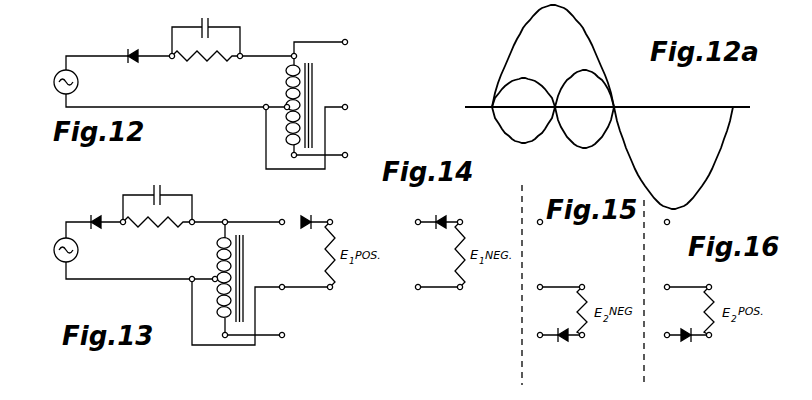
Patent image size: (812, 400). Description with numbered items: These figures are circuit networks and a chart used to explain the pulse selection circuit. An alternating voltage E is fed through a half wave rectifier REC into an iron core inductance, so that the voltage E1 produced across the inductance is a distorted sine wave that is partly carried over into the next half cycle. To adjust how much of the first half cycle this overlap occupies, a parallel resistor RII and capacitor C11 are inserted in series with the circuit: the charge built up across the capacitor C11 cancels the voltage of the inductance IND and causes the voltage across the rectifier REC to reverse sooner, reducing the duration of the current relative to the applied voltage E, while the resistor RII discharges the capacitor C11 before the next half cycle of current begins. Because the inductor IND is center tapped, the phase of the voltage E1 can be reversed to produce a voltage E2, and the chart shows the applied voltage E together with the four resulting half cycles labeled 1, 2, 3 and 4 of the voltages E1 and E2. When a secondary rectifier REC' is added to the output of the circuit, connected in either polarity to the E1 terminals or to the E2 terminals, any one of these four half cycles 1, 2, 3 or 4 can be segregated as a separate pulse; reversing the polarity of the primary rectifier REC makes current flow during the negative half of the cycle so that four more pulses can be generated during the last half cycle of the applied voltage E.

In FIG. 12, the alternating voltage E is at (54, 82).
In FIG. 12A, the alternating voltage E is at (518, 41).
In FIG. 13, the alternating voltage E is at (54, 250).
In FIG. 12, the half wave rectifier REC is at (119, 66).
In FIG. 13, the half wave rectifier REC is at (78, 203).
In FIG. 14, the half wave rectifier REC is at (465, 208).
In FIG. 15, the half wave rectifier REC is at (551, 354).
In FIG. 16, the half wave rectifier REC is at (695, 355).
In FIG. 13, the secondary rectifier REC' is at (294, 208).
In FIG. 12, the resistor RII is at (204, 60).
In FIG. 13, the resistor RII is at (150, 226).
In FIG. 12, the capacitor C11 is at (210, 21).
In FIG. 13, the capacitor C11 is at (162, 187).
In FIG. 12, the center-tapped inductor IND is at (284, 98).
In FIG. 13, the center-tapped inductor IND is at (216, 272).
In FIG. 12, the voltage across the inductance E1 is at (353, 74).
In FIG. 12A, the voltage across the inductance E1 is at (574, 141).
In FIG. 13, the voltage across the inductance E1 is at (286, 254).
In FIG. 14, the voltage across the inductance E1 is at (437, 242).
In FIG. 15, the voltage across the inductance E1 is at (540, 242).
In FIG. 16, the voltage across the inductance E1 is at (667, 242).
In FIG. 12, the phase-reversed voltage E2 is at (353, 140).
In FIG. 12A, the phase-reversed voltage E2 is at (497, 120).
In FIG. 13, the phase-reversed voltage E2 is at (286, 321).
In FIG. 14, the phase-reversed voltage E2 is at (437, 304).
In FIG. 15, the phase-reversed voltage E2 is at (559, 310).
In FIG. 16, the phase-reversed voltage E2 is at (685, 310).
In FIG. 12A, the half cycle of voltage 1 is at (524, 98).
In FIG. 12A, the half cycle of voltage 2 is at (582, 127).
In FIG. 12A, the half cycle of voltage 3 is at (521, 126).
In FIG. 12A, the half cycle of voltage 4 is at (584, 98).